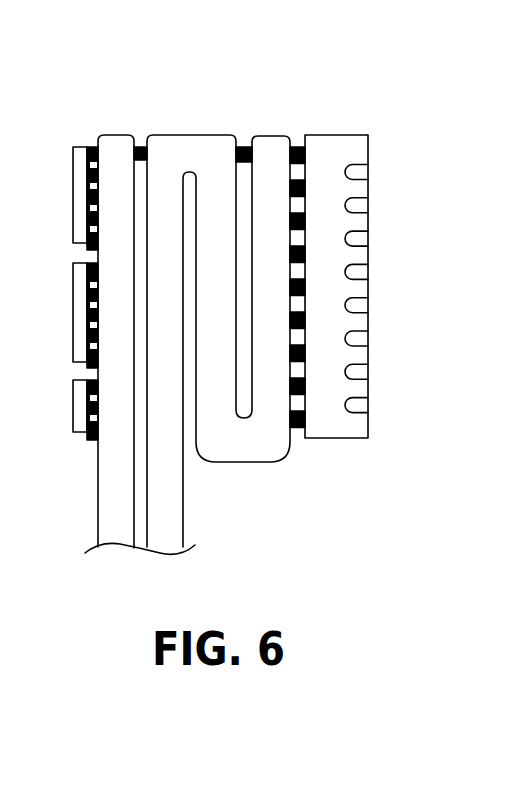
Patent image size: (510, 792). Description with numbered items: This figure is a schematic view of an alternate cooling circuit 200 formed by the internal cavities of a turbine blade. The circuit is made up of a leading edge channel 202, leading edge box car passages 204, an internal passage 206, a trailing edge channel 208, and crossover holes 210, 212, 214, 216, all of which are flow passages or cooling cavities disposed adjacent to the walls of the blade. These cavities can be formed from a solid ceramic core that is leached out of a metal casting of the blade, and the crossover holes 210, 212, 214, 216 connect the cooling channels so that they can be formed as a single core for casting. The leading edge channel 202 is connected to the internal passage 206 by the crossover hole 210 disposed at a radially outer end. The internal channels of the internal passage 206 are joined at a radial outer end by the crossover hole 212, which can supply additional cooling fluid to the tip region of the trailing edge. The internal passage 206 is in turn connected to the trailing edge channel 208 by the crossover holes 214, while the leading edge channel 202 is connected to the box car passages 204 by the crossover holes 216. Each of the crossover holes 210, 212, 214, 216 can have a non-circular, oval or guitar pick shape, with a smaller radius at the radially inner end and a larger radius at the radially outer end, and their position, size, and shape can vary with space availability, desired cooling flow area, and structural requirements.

The cooling circuit 200 is at (309, 63).
The leading edge channel 202 is at (112, 513).
The leading edge box car passages 204 is at (80, 205).
The internal passage 206 is at (265, 442).
The trailing edge channel 208 is at (322, 423).
The crossover hole 210 is at (141, 147).
The crossover hole 212 is at (239, 146).
The crossover holes 214 is at (294, 146).
The crossover holes 216 is at (92, 253).